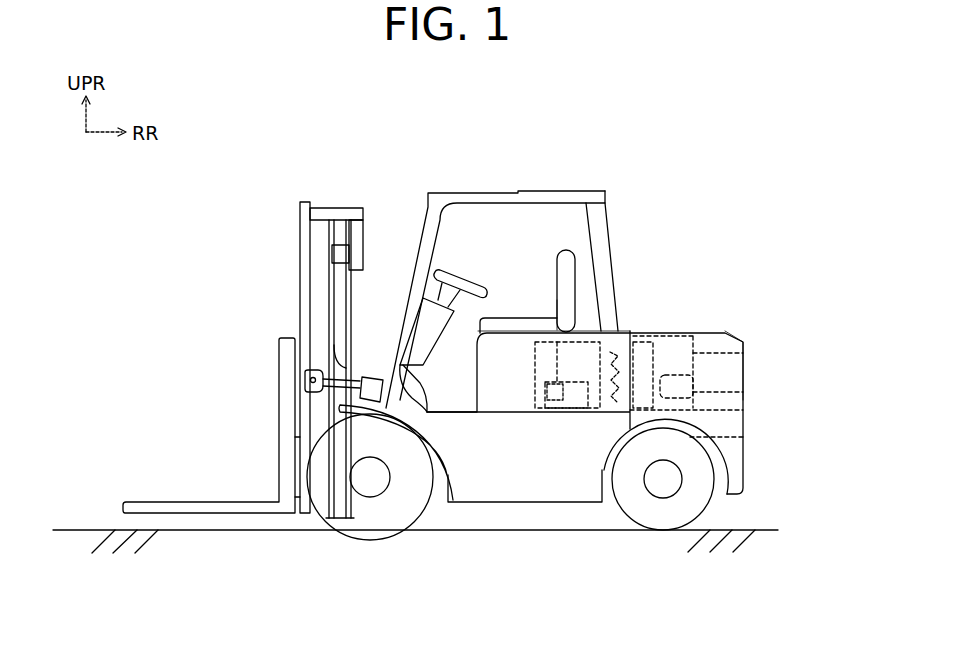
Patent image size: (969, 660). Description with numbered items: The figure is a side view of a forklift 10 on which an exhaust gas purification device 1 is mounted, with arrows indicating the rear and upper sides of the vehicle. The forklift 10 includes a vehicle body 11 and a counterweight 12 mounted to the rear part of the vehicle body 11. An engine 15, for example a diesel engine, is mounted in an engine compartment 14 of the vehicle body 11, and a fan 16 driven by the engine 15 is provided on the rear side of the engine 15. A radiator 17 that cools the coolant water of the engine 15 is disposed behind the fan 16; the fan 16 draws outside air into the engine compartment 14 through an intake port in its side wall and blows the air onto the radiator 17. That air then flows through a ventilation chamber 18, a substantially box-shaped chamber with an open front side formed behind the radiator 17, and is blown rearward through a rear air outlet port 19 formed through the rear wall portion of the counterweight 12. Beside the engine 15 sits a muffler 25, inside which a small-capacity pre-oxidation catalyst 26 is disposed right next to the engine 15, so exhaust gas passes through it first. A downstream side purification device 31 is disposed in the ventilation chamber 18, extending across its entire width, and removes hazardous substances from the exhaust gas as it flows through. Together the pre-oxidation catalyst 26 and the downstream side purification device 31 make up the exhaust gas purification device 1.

The forklift 10 is at (287, 143).
The vehicle body 11 is at (542, 490).
The counterweight 12 is at (725, 330).
The engine compartment 14 is at (511, 346).
The engine 15 is at (535, 373).
The muffler 25 is at (567, 413).
The fan 16 is at (611, 411).
The exhaust gas purification device 1 is at (688, 213).
The pre-oxidation catalyst 26 is at (568, 320).
The downstream side purification device 31 is at (667, 373).
The radiator 17 is at (641, 341).
The ventilation chamber 18 is at (686, 364).
The rear air outlet port 19 is at (732, 362).